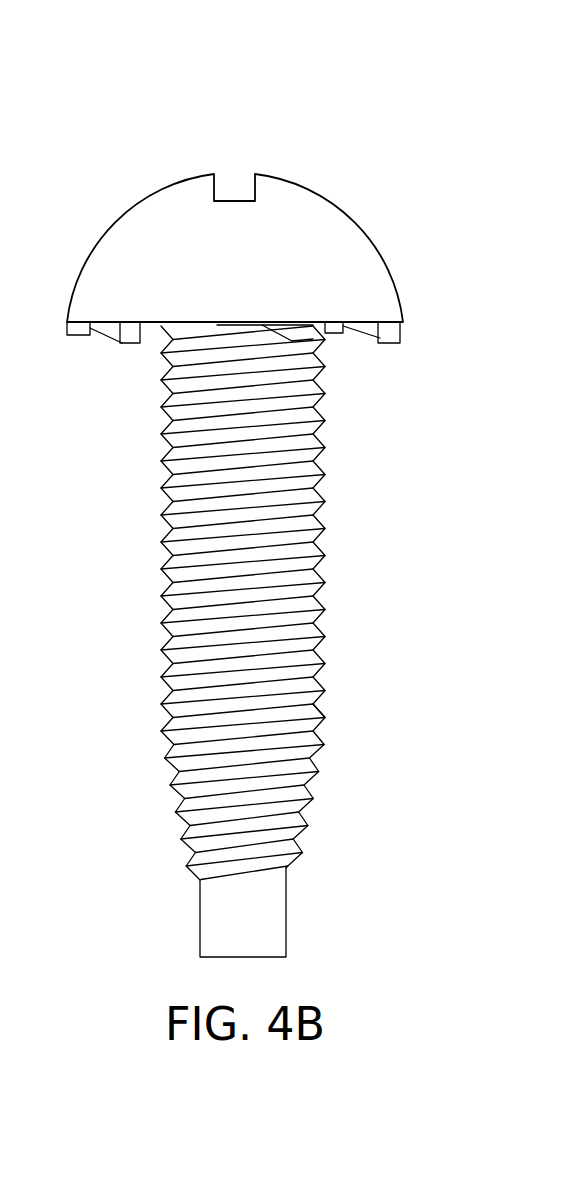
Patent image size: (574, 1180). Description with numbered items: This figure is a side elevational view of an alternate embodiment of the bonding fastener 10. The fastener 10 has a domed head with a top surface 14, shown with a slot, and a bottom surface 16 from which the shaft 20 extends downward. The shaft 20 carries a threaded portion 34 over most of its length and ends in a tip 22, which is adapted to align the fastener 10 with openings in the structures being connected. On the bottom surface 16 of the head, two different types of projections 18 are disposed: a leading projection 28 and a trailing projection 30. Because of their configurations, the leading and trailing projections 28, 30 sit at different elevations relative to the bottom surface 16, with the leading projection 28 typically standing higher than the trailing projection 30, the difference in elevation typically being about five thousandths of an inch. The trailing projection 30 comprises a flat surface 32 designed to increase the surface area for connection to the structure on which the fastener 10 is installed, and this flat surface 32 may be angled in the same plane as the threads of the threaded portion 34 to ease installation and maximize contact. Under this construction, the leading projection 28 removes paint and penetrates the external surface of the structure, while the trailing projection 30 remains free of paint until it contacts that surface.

The fastener 10 is at (278, 143).
The top surface 14 is at (313, 185).
The bottom surface 16 is at (333, 330).
The projections 18 is at (358, 333).
The shaft 20 is at (328, 603).
The tip 22 is at (278, 910).
The leading projection 28 is at (127, 342).
The trailing projection 30 is at (172, 340).
The flat surface 32 is at (215, 326).
The threaded portion 34 is at (324, 714).